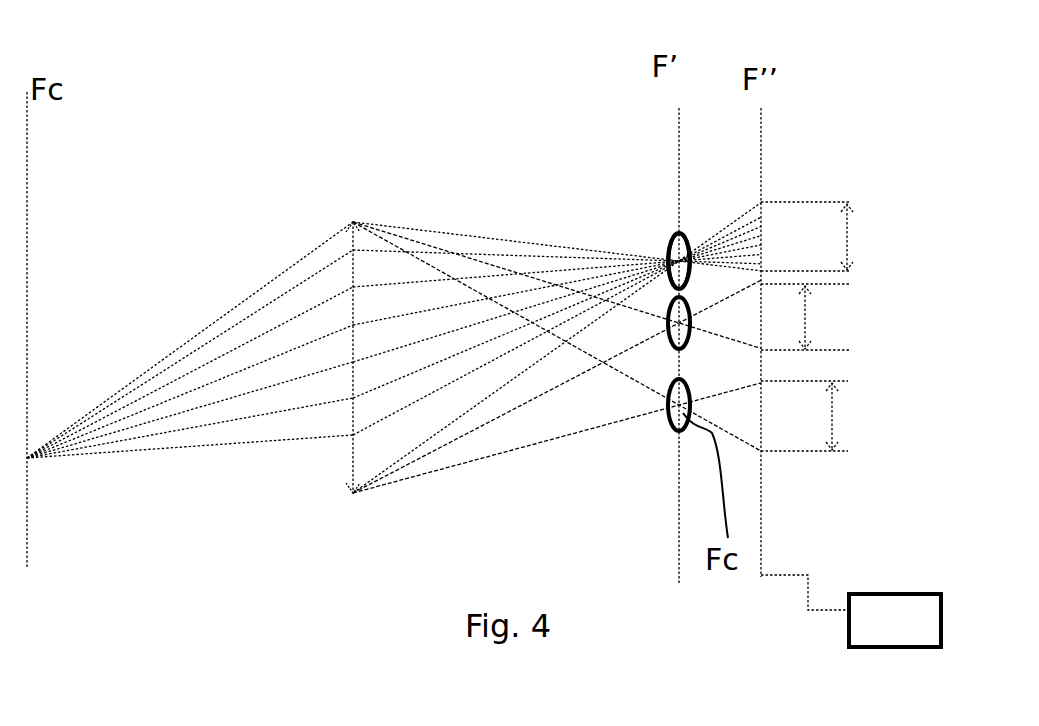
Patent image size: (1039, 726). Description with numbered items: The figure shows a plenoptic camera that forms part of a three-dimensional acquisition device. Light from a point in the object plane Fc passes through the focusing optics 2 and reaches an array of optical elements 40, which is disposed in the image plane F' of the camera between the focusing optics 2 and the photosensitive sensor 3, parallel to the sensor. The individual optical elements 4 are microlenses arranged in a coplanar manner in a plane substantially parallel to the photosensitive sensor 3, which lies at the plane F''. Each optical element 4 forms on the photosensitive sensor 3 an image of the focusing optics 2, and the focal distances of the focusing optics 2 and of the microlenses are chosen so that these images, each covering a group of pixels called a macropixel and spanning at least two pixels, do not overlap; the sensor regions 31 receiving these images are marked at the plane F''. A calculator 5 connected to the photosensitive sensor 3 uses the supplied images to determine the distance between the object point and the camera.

The focusing optics 2 is at (355, 220).
The photosensitive sensor 3 is at (762, 125).
The detector zone 31 is at (823, 326).
The optical element 4 is at (672, 428).
The array of optical elements 40 is at (667, 220).
The calculator 5 is at (855, 593).